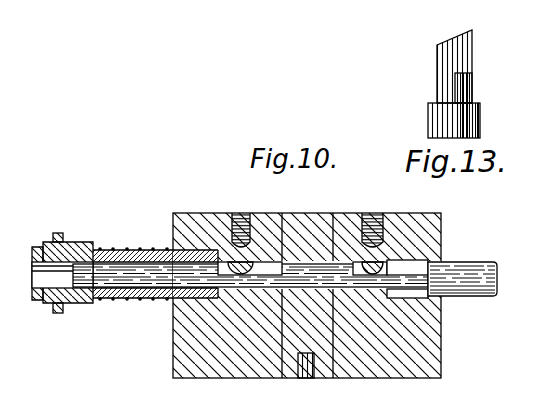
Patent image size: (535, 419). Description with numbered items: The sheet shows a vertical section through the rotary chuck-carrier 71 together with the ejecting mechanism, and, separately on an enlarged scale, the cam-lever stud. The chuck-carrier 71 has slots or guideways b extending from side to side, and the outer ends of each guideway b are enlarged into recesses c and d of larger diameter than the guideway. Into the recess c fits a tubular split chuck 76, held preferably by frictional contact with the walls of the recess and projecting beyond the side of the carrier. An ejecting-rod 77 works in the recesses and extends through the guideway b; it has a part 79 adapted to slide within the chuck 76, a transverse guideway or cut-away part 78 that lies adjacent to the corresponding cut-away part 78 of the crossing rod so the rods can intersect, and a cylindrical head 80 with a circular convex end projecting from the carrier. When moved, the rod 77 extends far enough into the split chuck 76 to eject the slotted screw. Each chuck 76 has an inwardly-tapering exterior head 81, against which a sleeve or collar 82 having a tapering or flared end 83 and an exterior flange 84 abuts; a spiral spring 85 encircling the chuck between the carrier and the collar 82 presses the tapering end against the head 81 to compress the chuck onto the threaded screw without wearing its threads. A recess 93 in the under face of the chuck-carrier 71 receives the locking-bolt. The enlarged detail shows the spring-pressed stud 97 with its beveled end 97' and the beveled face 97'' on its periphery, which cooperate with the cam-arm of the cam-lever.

In FIG. 10, the rotary chuck-carrier 71 is at (441, 358).
In FIG. 10, the tubular split chuck 76 is at (33, 304).
In FIG. 10, the ejecting-rod 77 is at (235, 262).
In FIG. 10, the transverse guideway or cut-away part 78 is at (270, 270).
In FIG. 10, the sliding part of ejecting-rod 79 is at (128, 268).
In FIG. 10, the cylindrical head 80 is at (479, 296).
In FIG. 10, the inwardly-tapering exterior head 81 is at (35, 247).
In FIG. 10, the sleeve or collar 82 is at (67, 249).
In FIG. 10, the tapering or flared end 83 is at (57, 233).
In FIG. 10, the exterior flange 84 is at (62, 310).
In FIG. 10, the spiral spring 85 is at (115, 300).
In FIG. 10, the recess 93 is at (311, 378).
In FIG. 13, the spring-pressed stud 97 is at (444, 110).
In FIG. 13, the beveled end 97' is at (447, 56).
In FIG. 13, the beveled face 97'' is at (484, 72).
In FIG. 10, the guideway b is at (237, 266).
In FIG. 10, the recess c is at (173, 252).
In FIG. 10, the recess d is at (430, 268).